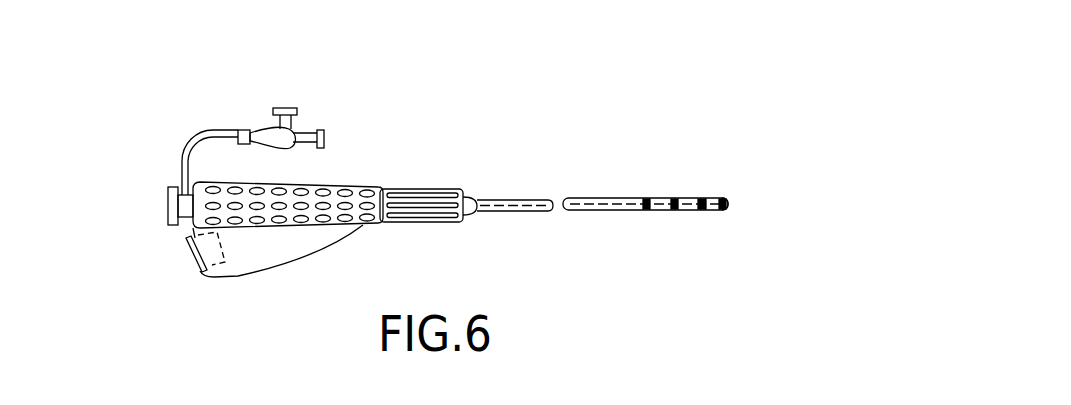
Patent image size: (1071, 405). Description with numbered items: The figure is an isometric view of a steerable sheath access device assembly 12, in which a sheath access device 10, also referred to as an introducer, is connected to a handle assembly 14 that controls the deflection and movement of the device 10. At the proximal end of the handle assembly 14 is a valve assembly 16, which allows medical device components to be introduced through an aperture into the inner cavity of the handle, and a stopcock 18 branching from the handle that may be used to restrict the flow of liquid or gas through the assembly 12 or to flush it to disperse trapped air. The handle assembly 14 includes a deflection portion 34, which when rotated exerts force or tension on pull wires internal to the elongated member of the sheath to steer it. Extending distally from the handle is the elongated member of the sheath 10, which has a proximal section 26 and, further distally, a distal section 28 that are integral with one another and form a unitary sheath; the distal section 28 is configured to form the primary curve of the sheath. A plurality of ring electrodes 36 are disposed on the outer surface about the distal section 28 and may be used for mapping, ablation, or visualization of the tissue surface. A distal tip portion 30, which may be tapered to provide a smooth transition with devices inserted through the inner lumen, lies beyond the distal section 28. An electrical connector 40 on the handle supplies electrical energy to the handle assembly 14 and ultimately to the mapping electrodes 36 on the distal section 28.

The sheath access device 10 is at (675, 189).
The steerable sheath access device assembly 12 is at (301, 183).
The handle assembly 14 is at (364, 148).
The valve assembly 16 is at (135, 197).
The stopcock 18 is at (254, 88).
The proximal section 26 is at (508, 212).
The distal section 28 is at (654, 210).
The distal tip portion 30 is at (745, 180).
The deflection portion 34 is at (437, 188).
The ring electrodes 36 is at (670, 197).
The electrical connector 40 is at (202, 273).